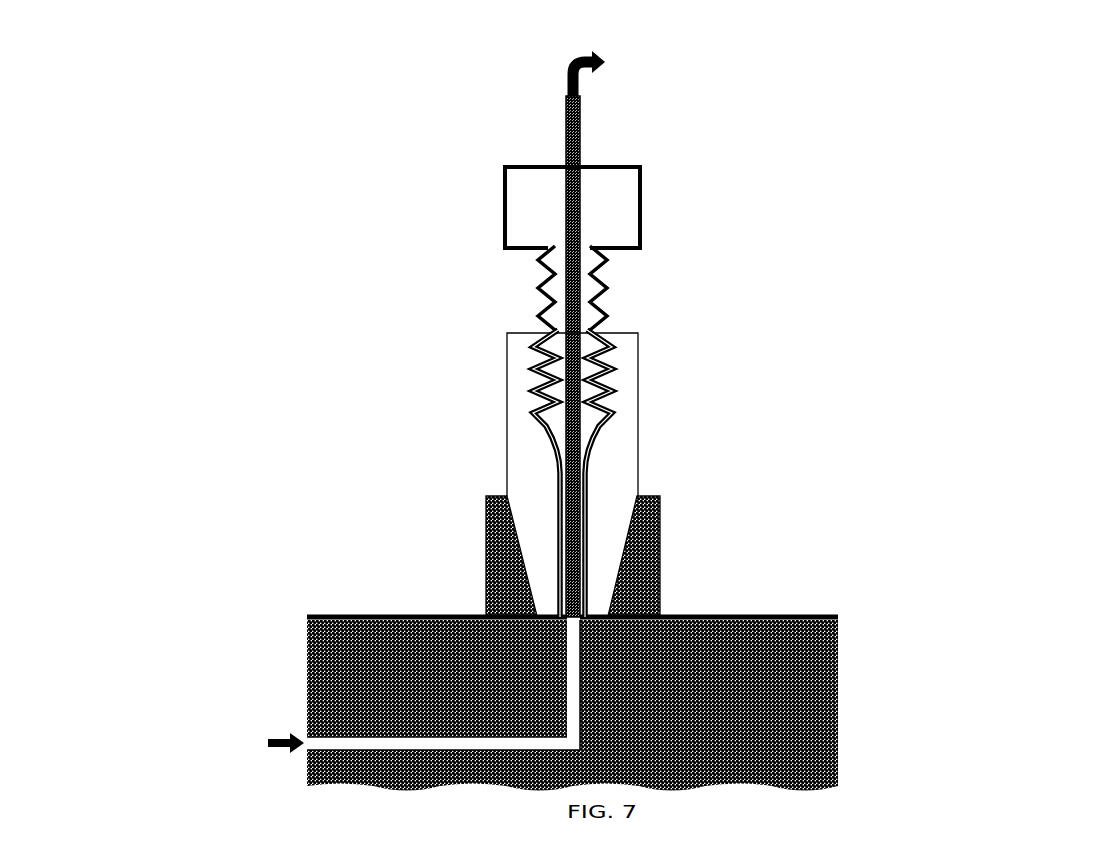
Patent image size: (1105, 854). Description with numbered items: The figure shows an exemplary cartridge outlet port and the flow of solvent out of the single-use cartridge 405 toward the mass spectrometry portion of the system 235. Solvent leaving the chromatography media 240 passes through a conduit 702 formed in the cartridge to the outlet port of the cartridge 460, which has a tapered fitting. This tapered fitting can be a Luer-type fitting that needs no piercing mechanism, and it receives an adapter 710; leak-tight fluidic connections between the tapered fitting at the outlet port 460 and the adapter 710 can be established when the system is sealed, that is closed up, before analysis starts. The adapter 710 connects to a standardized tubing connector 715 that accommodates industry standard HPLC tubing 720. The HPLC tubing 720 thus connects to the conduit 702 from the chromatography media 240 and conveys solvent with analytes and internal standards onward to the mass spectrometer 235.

The mass spectrometry portion of the system 235 is at (696, 58).
The chromatography media 240 is at (189, 737).
The single-use cartridge 405 is at (772, 700).
The outlet port of the cartridge 460 is at (645, 533).
The conduit 702 is at (547, 742).
The adapter 710 is at (625, 445).
The standardized tubing connector 715 is at (608, 211).
The industry standard HPLC tubing 720 is at (580, 114).